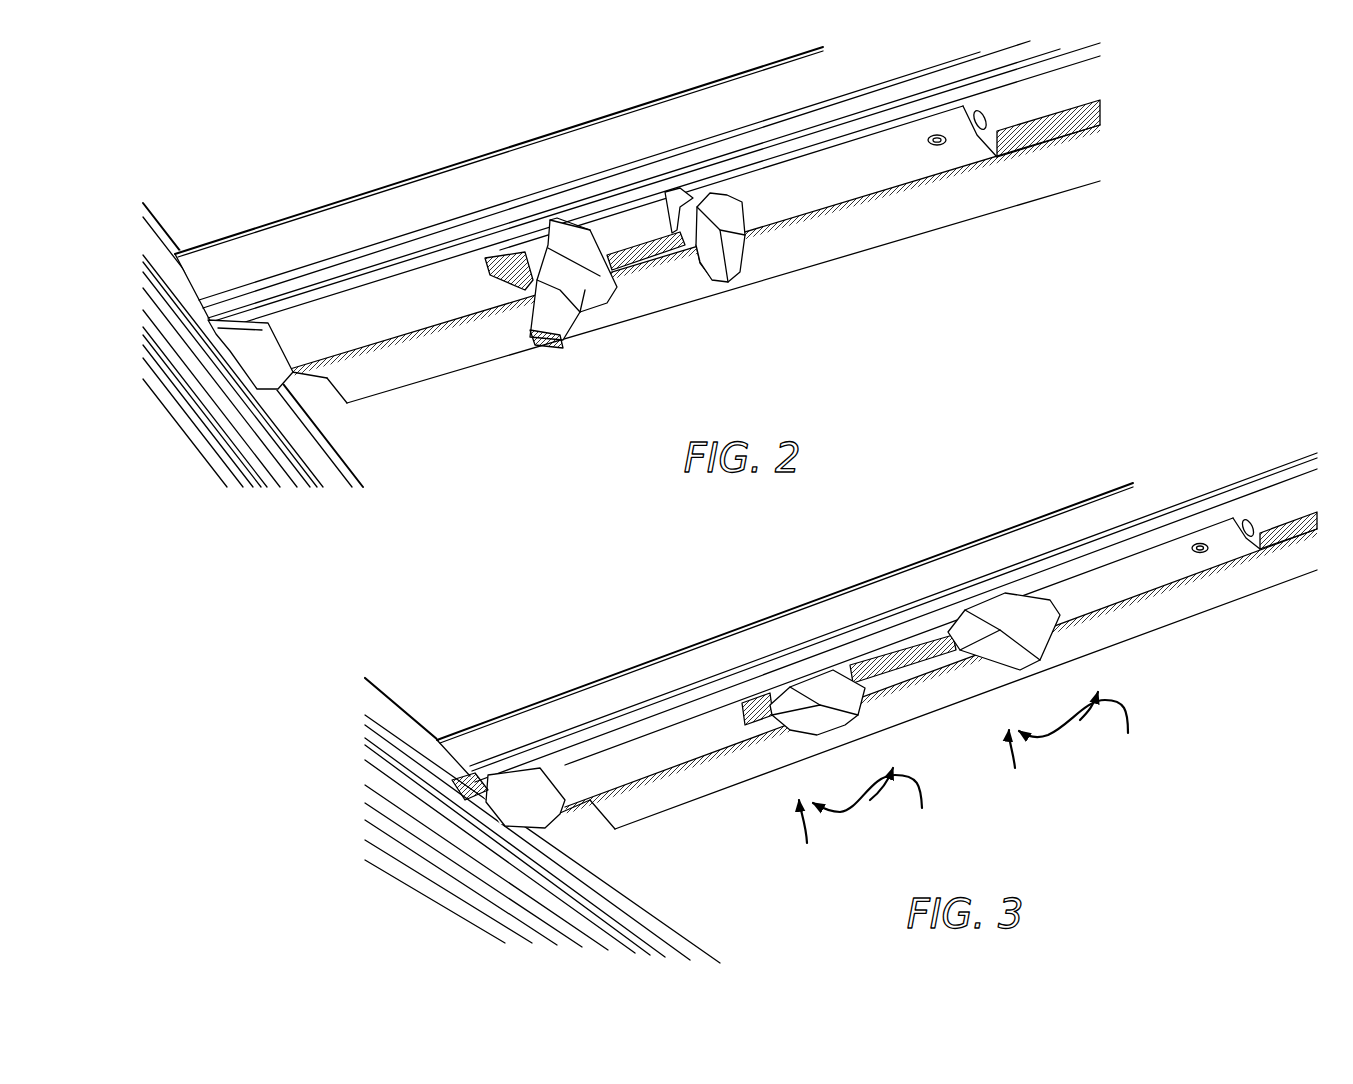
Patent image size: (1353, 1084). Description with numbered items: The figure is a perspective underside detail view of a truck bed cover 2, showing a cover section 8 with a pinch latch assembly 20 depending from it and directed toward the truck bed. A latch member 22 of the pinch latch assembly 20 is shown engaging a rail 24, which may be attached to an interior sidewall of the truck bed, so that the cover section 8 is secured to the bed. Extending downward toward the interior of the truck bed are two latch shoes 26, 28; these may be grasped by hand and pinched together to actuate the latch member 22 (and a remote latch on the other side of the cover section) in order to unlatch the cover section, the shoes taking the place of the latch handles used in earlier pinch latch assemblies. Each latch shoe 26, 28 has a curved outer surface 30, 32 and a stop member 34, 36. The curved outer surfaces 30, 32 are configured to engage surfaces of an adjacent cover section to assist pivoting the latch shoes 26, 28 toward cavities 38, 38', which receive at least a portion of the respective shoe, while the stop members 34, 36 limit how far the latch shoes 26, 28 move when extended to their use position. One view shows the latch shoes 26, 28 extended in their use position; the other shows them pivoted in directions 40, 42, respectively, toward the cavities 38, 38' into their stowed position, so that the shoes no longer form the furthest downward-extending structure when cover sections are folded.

In FIG. 2, the truck bed cover 2 is at (420, 468).
In FIG. 3, the truck bed cover 2 is at (736, 863).
In FIG. 2, the cover section 8 is at (862, 287).
In FIG. 3, the cover section 8 is at (938, 670).
In FIG. 2, the pinch latch assembly 20 is at (614, 180).
In FIG. 3, the pinch latch assembly 20 is at (871, 618).
In FIG. 2, the latch member 22 is at (262, 362).
In FIG. 3, the latch member 22 is at (524, 802).
In FIG. 2, the rail 24 is at (147, 310).
In FIG. 3, the rail 24 is at (460, 820).
In FIG. 2, the latch shoe 26 is at (581, 312).
In FIG. 3, the latch shoe 26 is at (817, 684).
In FIG. 2, the latch shoe 28 is at (732, 243).
In FIG. 3, the latch shoe 28 is at (1012, 612).
In FIG. 2, the curved outer surface 30 is at (556, 299).
In FIG. 2, the curved outer surface 32 is at (708, 268).
In FIG. 2, the stop member 34 is at (575, 252).
In FIG. 2, the stop member 36 is at (677, 193).
In FIG. 2, the cavity 38 is at (488, 192).
In FIG. 3, the cavity 38 is at (813, 617).
In FIG. 2, the cavity 38' is at (646, 307).
In FIG. 3, the direction 40 is at (912, 803).
In FIG. 3, the direction 42 is at (979, 767).